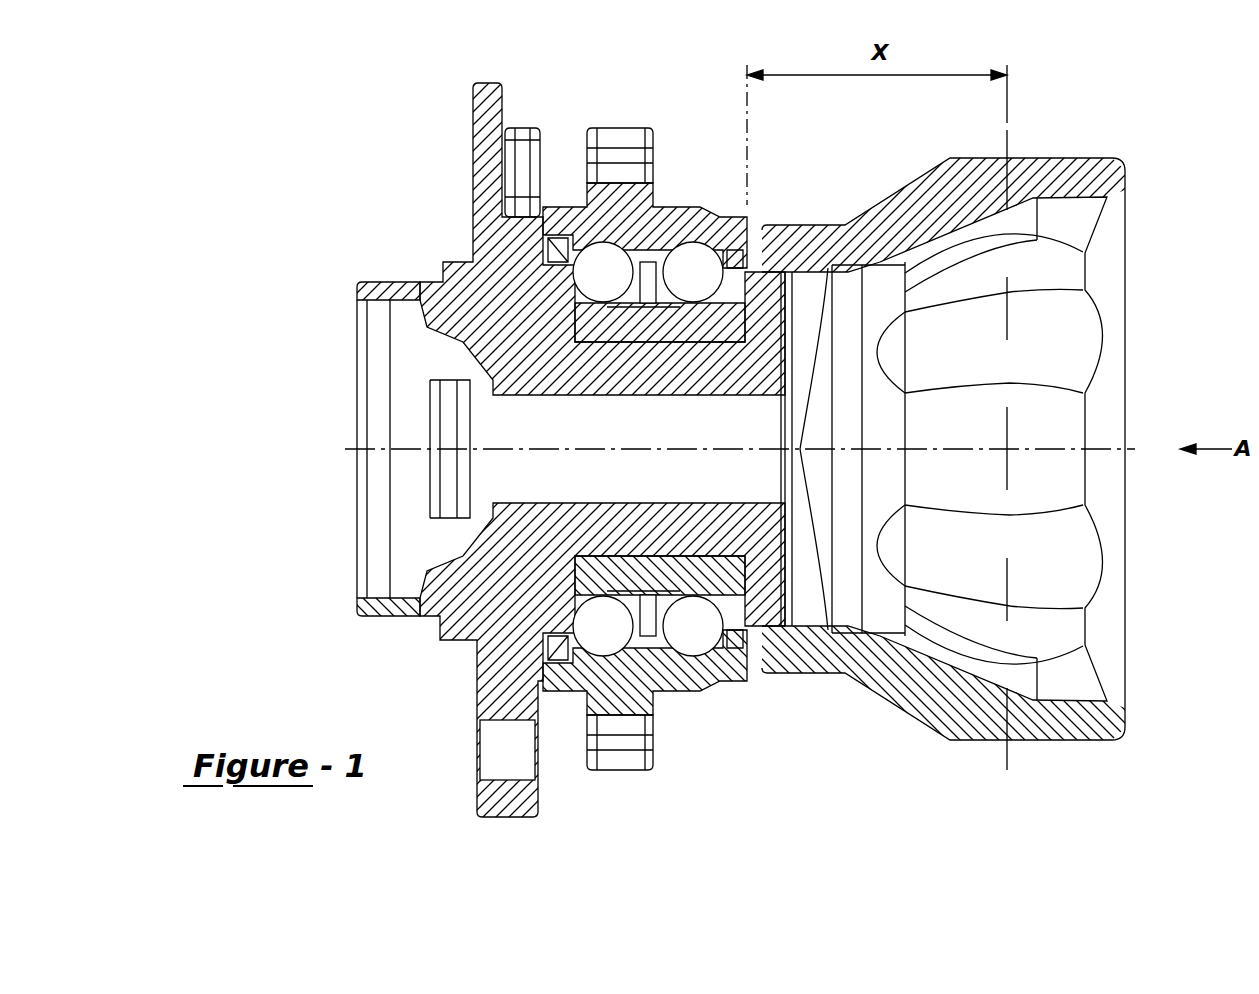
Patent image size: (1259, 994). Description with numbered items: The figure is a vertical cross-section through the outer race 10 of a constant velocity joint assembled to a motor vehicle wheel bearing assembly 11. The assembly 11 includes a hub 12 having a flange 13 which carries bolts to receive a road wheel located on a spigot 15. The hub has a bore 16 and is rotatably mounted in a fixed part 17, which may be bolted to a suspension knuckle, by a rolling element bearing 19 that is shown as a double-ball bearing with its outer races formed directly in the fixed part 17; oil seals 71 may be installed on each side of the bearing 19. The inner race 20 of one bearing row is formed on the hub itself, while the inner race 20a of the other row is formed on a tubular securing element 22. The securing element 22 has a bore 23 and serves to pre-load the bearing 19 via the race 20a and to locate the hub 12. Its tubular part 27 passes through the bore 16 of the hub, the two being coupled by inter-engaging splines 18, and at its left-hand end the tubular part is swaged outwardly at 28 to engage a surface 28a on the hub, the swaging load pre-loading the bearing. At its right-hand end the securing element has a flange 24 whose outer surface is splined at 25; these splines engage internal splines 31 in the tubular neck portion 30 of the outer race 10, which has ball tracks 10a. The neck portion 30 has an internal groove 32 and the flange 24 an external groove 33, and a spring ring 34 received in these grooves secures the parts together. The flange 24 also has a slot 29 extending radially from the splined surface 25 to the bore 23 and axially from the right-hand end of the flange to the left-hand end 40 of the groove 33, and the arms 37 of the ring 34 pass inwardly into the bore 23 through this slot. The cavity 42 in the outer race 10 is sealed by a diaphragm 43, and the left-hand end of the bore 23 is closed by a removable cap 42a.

The outer race 10 is at (893, 186).
The ball tracks 10a is at (1020, 218).
The wheel bearing assembly 11 is at (566, 128).
The hub 12 is at (482, 273).
The flange 13 is at (485, 108).
The spigot 15 is at (470, 258).
The bore 16 is at (613, 557).
The fixed part 17 is at (615, 140).
The inter-engaging splines 18 is at (480, 510).
The rolling element bearing 19 is at (608, 262).
The inner race 20 is at (367, 316).
The inner race 20a is at (700, 240).
The tubular securing element 22 is at (493, 375).
The bore 23 is at (536, 397).
The flange 24 is at (745, 652).
The splines 25 is at (793, 630).
The tubular part 27 is at (617, 370).
The swaged end 28 is at (420, 545).
The surface 28a is at (378, 588).
The slot 29 is at (825, 312).
The tubular neck portion 30 is at (828, 655).
The splines 31 is at (808, 310).
The internal groove 32 is at (787, 605).
The external groove 33 is at (795, 602).
The spring ring 34 is at (800, 358).
The arms 37 is at (743, 475).
The left-hand end of groove 40 is at (785, 315).
The cavity 42 is at (897, 632).
The removable cap 42a is at (463, 477).
The diaphragm 43 is at (800, 440).
The oil seal 71 is at (723, 690).